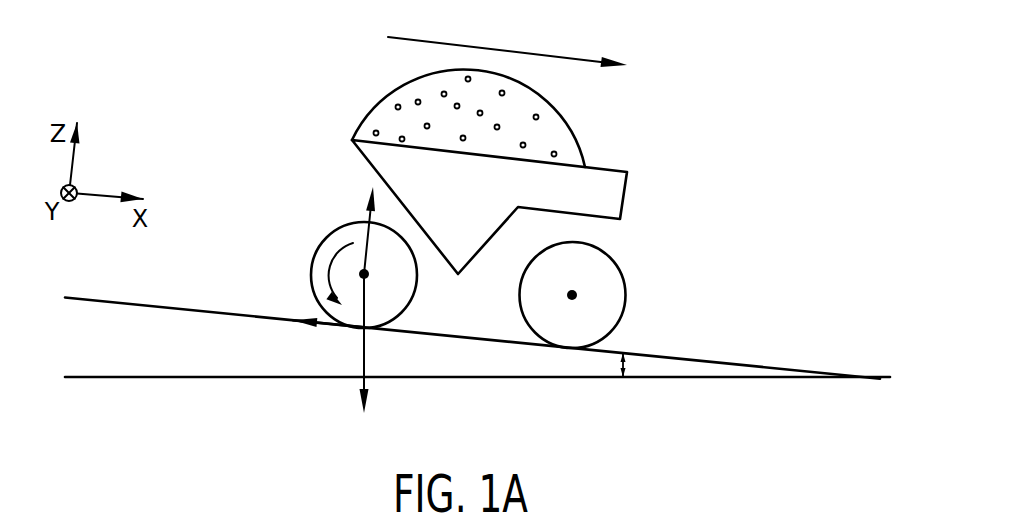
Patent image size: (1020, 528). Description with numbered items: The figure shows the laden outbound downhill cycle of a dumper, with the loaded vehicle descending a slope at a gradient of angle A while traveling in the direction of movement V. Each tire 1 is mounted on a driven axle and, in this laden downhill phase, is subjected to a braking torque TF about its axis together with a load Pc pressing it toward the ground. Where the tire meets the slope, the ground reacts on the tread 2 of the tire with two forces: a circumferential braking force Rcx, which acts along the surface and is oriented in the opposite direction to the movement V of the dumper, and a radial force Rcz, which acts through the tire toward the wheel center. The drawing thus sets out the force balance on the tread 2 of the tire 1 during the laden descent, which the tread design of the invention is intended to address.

The tire 1 is at (282, 237).
The tread 2 is at (324, 210).
The movement of the dumper V is at (507, 33).
The angle of the gradient A is at (612, 367).
The radial force Rcz is at (354, 218).
The circumferential braking force Rcx is at (320, 342).
The braking torque TF is at (298, 306).
The load Pc is at (380, 352).